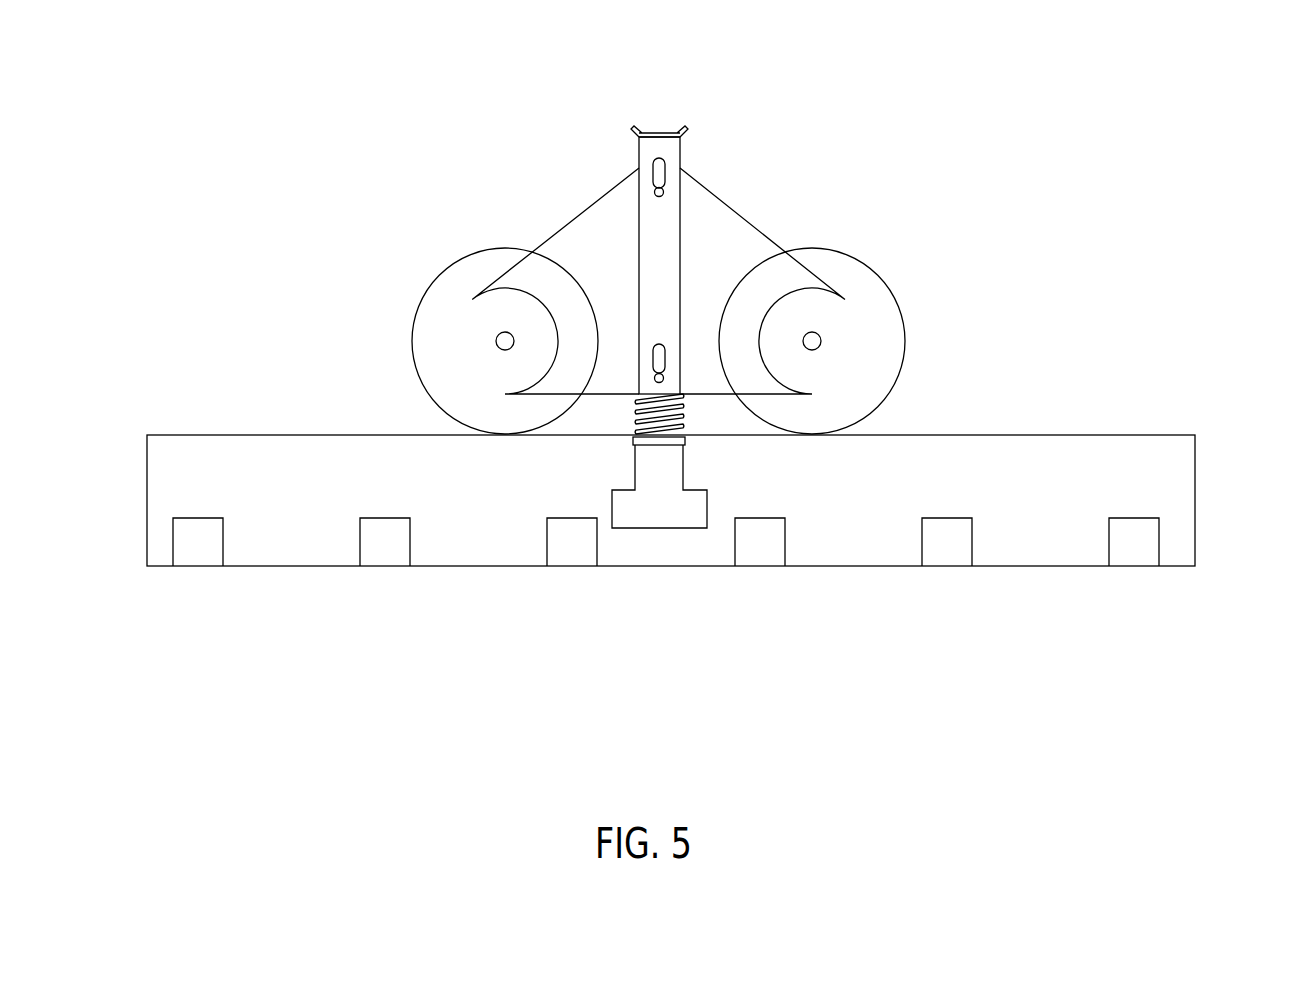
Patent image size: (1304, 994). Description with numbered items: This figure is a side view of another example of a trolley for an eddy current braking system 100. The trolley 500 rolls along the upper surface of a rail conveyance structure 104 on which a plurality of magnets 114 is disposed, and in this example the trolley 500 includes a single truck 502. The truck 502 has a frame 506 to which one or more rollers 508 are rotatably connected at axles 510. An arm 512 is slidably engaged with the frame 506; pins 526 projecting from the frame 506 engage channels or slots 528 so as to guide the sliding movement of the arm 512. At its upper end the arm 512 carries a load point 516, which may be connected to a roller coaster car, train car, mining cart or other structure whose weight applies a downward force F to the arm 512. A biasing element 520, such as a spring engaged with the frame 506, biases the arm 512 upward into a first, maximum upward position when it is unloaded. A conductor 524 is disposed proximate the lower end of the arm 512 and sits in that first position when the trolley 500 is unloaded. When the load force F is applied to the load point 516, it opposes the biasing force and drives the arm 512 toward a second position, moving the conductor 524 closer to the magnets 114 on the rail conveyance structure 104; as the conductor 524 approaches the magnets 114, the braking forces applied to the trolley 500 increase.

The eddy current braking system 100 is at (1082, 121).
The rail conveyance structure 104 is at (1158, 479).
The magnets 114 is at (1137, 546).
The trolley 500 is at (843, 208).
The truck 502 is at (769, 190).
The frame 506 is at (565, 258).
The rollers 508 is at (430, 324).
The axles 510 is at (507, 340).
The arm 512 is at (665, 292).
The load point 516 is at (671, 116).
The biasing element 520 is at (636, 414).
The conductor 524 is at (685, 502).
The pins 526 is at (664, 193).
The slots 528 is at (652, 178).